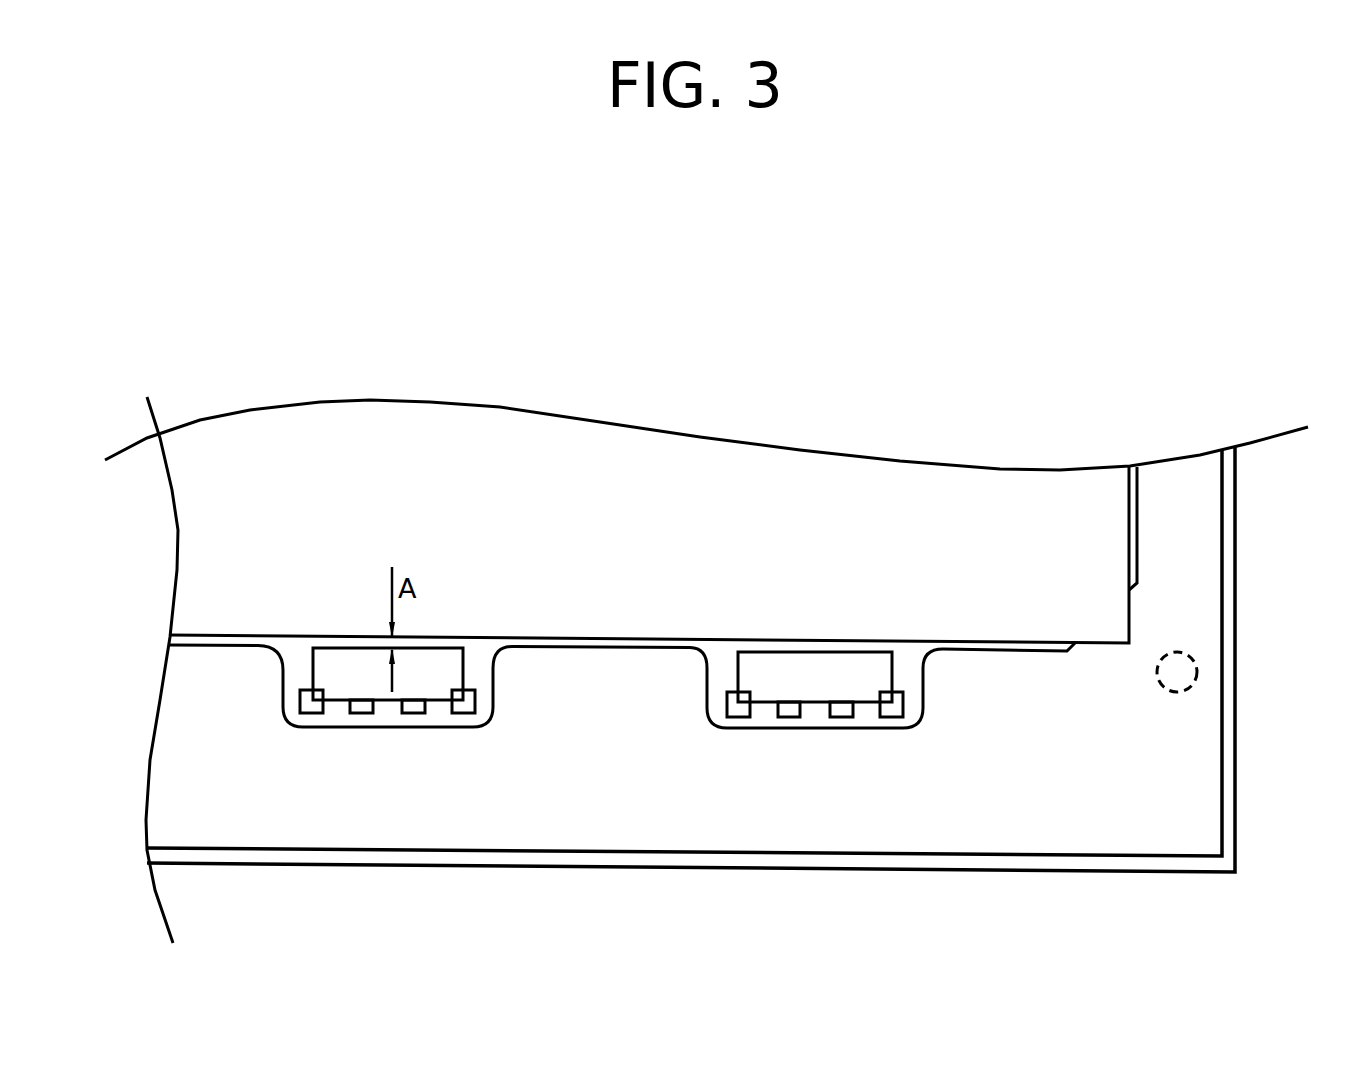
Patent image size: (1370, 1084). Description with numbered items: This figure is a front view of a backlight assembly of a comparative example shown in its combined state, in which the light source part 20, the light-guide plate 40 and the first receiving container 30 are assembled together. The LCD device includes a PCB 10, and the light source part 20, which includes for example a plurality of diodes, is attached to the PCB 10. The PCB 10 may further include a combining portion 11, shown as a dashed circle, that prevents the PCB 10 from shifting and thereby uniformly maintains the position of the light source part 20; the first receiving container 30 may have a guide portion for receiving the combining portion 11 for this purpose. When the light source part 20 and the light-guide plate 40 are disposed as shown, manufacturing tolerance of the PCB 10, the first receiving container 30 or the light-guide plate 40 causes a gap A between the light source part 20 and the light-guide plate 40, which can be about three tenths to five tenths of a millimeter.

The PCB 10 is at (815, 675).
The combining portion 11 is at (1177, 668).
The light source part 20 is at (828, 672).
The first receiving container 30 is at (947, 798).
The light-guide plate 40 is at (1011, 500).